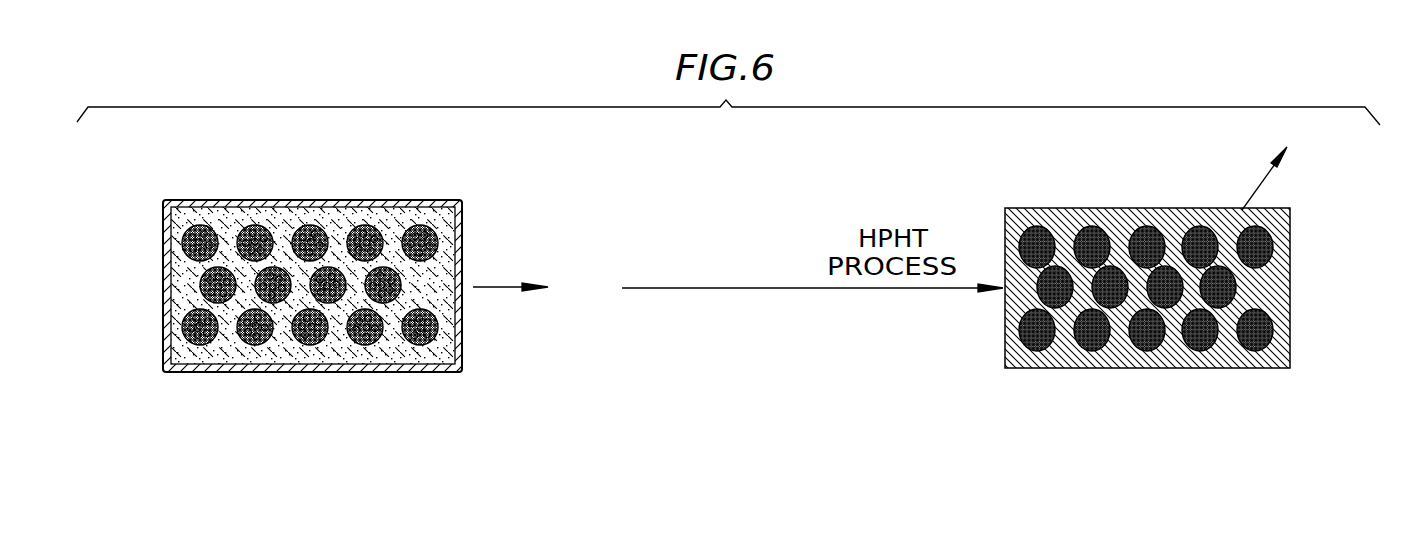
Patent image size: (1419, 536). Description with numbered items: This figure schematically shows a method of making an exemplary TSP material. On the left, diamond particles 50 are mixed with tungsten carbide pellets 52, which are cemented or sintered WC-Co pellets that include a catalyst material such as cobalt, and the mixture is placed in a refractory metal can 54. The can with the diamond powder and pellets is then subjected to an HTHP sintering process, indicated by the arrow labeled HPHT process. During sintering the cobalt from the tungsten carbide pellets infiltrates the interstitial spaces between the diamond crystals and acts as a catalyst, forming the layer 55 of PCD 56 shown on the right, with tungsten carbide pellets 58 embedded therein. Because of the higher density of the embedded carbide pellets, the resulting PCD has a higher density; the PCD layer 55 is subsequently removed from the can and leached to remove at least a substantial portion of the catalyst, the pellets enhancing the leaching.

The diamond particles 50 is at (279, 280).
The tungsten carbide pellets 52 is at (183, 328).
The refractory metal can 54 is at (348, 200).
The layer of PCD 55 is at (1190, 250).
The PCD 56 is at (1062, 218).
The tungsten carbide pellets embedded in PCD 58 is at (1262, 229).